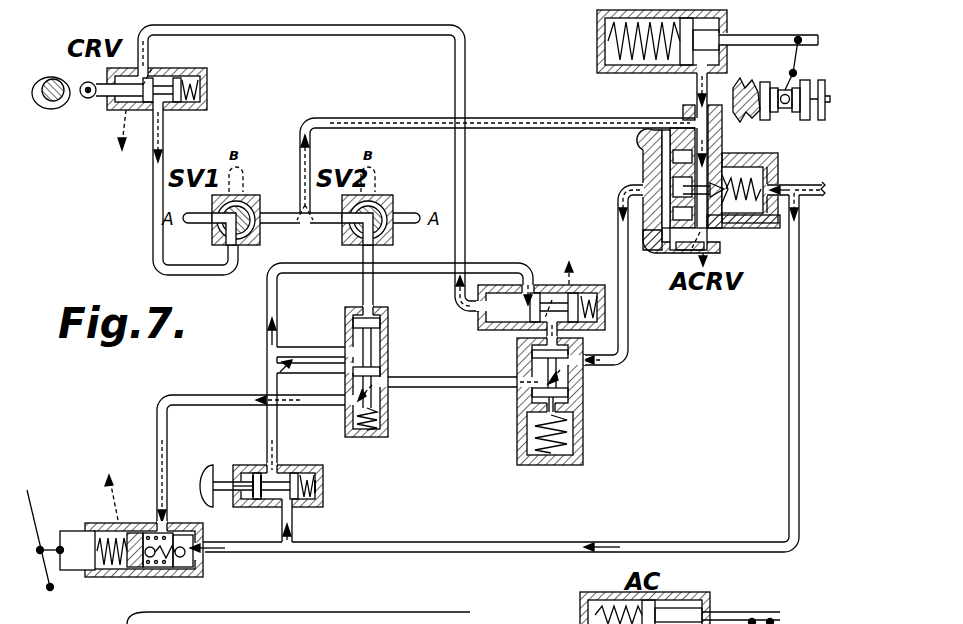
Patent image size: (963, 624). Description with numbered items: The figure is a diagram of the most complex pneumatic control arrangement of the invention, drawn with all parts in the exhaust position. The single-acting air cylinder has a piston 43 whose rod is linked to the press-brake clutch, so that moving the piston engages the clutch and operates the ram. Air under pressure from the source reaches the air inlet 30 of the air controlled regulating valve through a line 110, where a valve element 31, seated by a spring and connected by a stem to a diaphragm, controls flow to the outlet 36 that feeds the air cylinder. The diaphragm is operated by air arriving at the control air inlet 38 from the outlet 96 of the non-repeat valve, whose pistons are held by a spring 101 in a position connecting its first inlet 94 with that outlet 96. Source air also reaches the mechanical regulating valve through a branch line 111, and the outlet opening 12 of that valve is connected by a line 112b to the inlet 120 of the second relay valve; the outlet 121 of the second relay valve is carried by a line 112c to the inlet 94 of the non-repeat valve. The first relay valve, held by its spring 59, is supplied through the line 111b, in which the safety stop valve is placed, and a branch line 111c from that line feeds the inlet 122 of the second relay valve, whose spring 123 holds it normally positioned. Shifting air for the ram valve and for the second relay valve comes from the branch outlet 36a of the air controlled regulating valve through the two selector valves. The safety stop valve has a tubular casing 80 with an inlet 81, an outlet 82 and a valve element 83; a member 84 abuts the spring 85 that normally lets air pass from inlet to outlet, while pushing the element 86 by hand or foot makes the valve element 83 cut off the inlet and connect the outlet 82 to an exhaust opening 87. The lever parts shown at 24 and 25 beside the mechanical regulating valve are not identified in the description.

The piston 43 is at (680, 58).
The outlet 36 is at (708, 114).
The branch outlet 36a is at (692, 117).
The control air inlet 38 is at (645, 186).
The valve element 31 is at (723, 162).
The air inlet 30 is at (774, 158).
The line 110 is at (804, 200).
The spring 59 is at (590, 290).
The outlet 96 is at (585, 367).
The first inlet 94 is at (522, 391).
The spring 101 is at (540, 447).
The branch line 111 is at (498, 545).
The line 111b is at (267, 298).
The branch line 111c is at (338, 384).
The line 112b is at (157, 428).
The line 112c is at (437, 385).
The inlet 120 is at (342, 402).
The outlet 121 is at (387, 389).
The inlet 122 is at (341, 350).
The spring 123 is at (386, 425).
The tubular casing 80 is at (297, 459).
The member 84 is at (322, 470).
The outlet 82 is at (265, 466).
The element 86 is at (200, 486).
The exhaust opening 87 is at (240, 506).
The valve element 83 is at (268, 506).
The inlet 81 is at (293, 510).
The spring 85 is at (323, 490).
The outlet opening 12 is at (152, 522).
The lever 24 is at (32, 496).
The link 25 is at (50, 590).